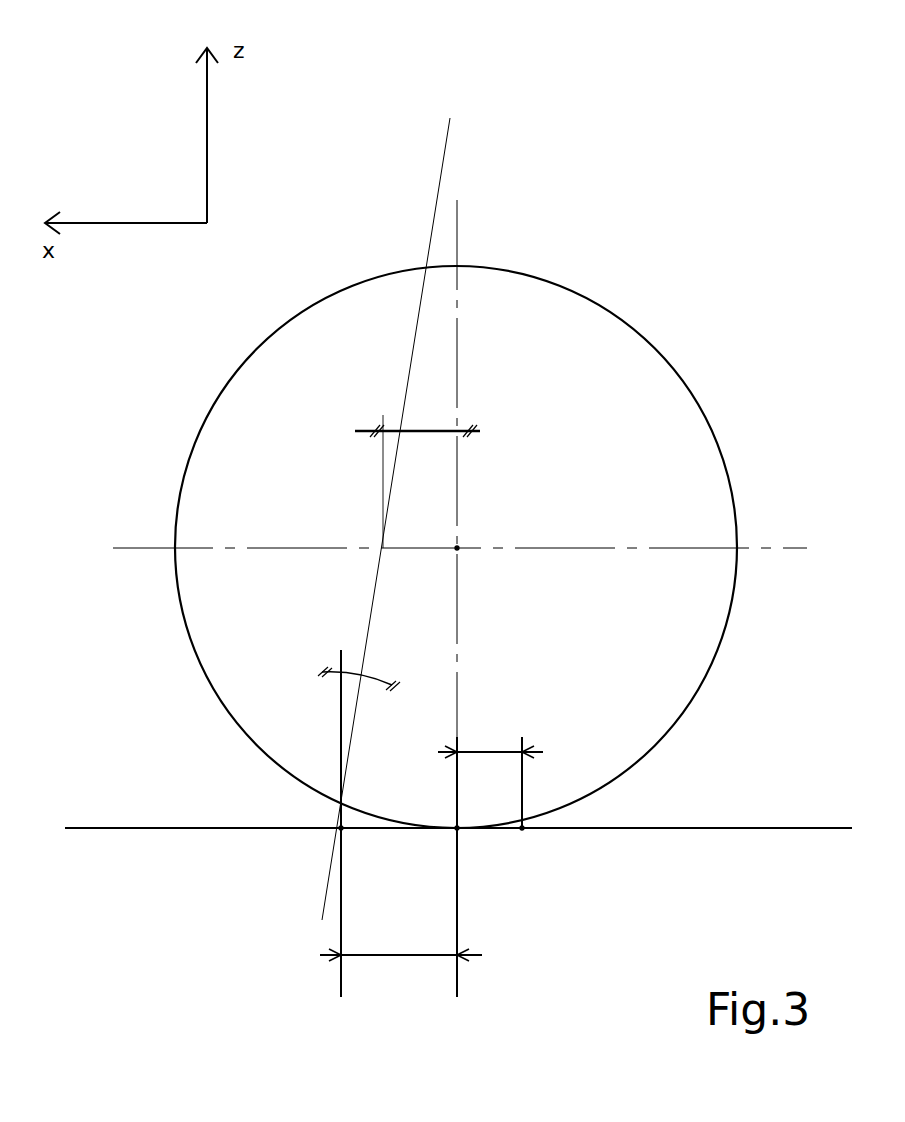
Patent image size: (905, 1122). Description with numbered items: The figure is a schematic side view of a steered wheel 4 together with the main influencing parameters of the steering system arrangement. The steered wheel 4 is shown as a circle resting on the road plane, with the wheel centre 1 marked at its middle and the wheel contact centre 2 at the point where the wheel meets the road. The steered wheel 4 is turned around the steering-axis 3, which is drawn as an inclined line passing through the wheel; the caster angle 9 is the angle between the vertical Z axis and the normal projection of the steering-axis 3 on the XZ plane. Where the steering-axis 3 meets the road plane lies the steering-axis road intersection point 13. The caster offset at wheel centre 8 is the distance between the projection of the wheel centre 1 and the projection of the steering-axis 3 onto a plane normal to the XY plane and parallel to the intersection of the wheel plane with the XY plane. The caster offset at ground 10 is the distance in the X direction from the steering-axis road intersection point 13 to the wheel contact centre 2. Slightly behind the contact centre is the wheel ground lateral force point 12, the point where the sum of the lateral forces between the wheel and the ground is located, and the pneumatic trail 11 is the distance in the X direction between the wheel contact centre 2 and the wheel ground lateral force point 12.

The wheel centre 1 is at (458, 548).
The wheel contact centre 2 is at (457, 828).
The steering-axis 3 is at (442, 175).
The steered wheel 4 is at (610, 310).
The caster offset at wheel centre 8 is at (427, 428).
The caster angle 9 is at (355, 670).
The caster offset at ground 10 is at (398, 953).
The pneumatic trail 11 is at (487, 752).
The wheel ground lateral force point 12 is at (522, 828).
The steering-axis road intersection point 13 is at (341, 828).